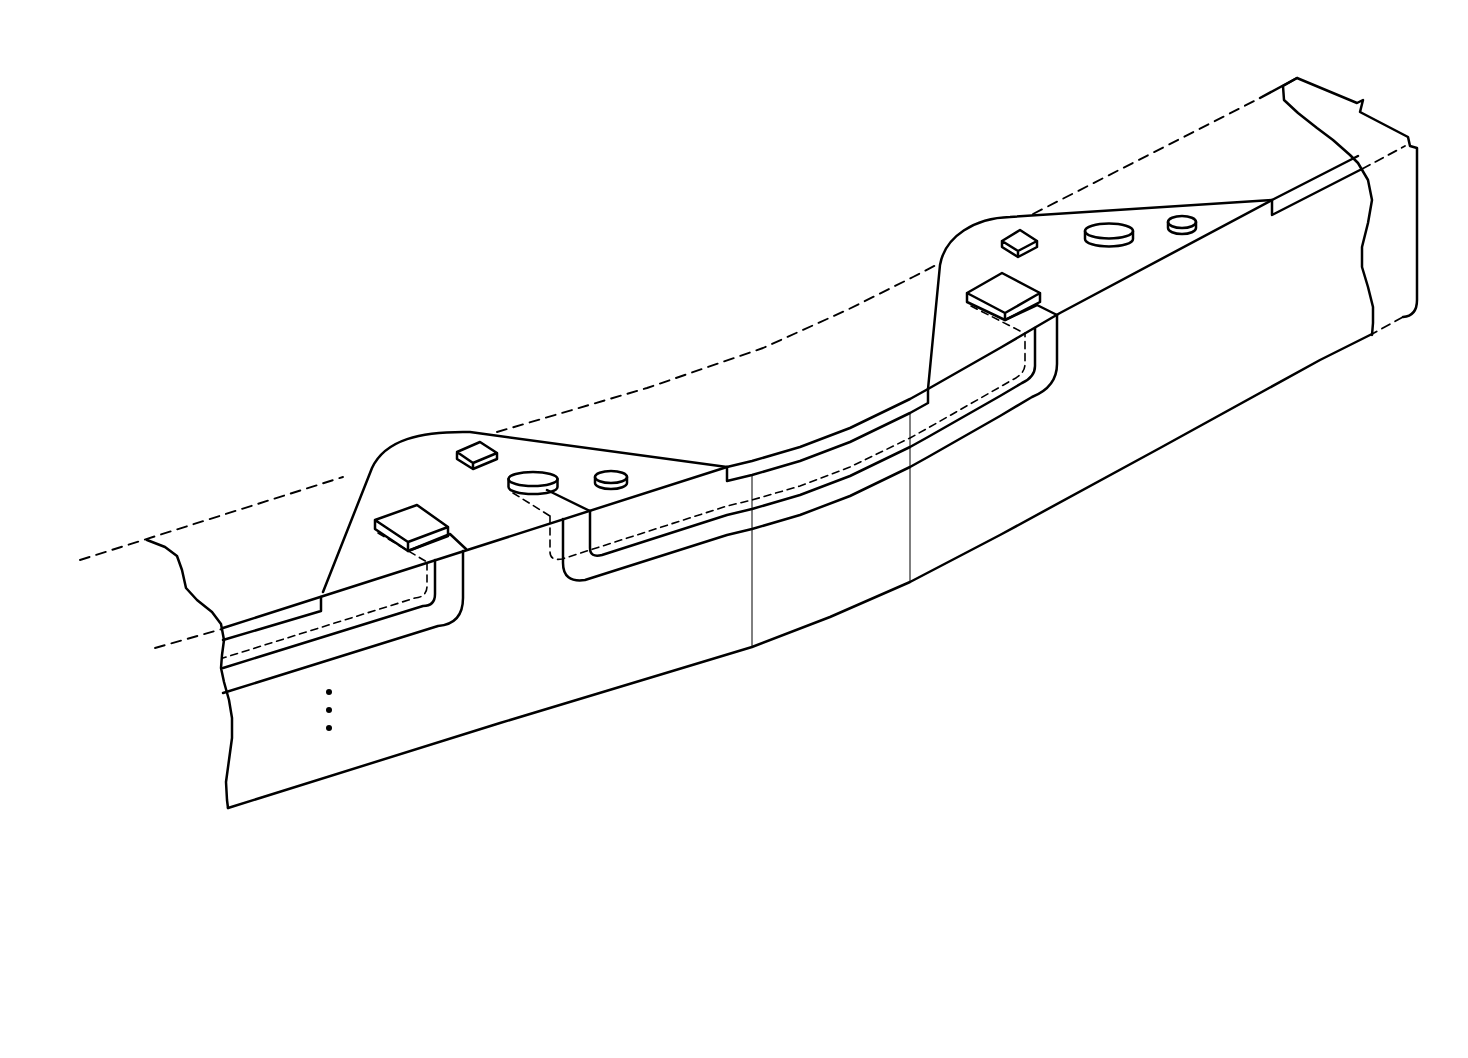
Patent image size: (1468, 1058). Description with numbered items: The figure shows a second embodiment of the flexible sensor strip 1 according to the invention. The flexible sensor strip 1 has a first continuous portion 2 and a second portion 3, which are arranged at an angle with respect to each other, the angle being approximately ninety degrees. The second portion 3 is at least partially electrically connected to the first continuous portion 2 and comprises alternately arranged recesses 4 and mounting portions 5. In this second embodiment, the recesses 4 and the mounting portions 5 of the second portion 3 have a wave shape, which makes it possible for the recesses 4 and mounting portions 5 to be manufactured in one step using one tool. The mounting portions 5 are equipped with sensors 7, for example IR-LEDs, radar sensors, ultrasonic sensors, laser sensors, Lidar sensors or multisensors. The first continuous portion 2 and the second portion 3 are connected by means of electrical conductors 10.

The flexible sensor strip 1 is at (438, 266).
The first continuous portion 2 is at (1417, 212).
The second portion 3 is at (1338, 205).
The recesses 4 is at (250, 557).
The mounting portions 5 is at (402, 437).
The sensors 7 is at (404, 519).
The electrical conductors 10 is at (392, 630).